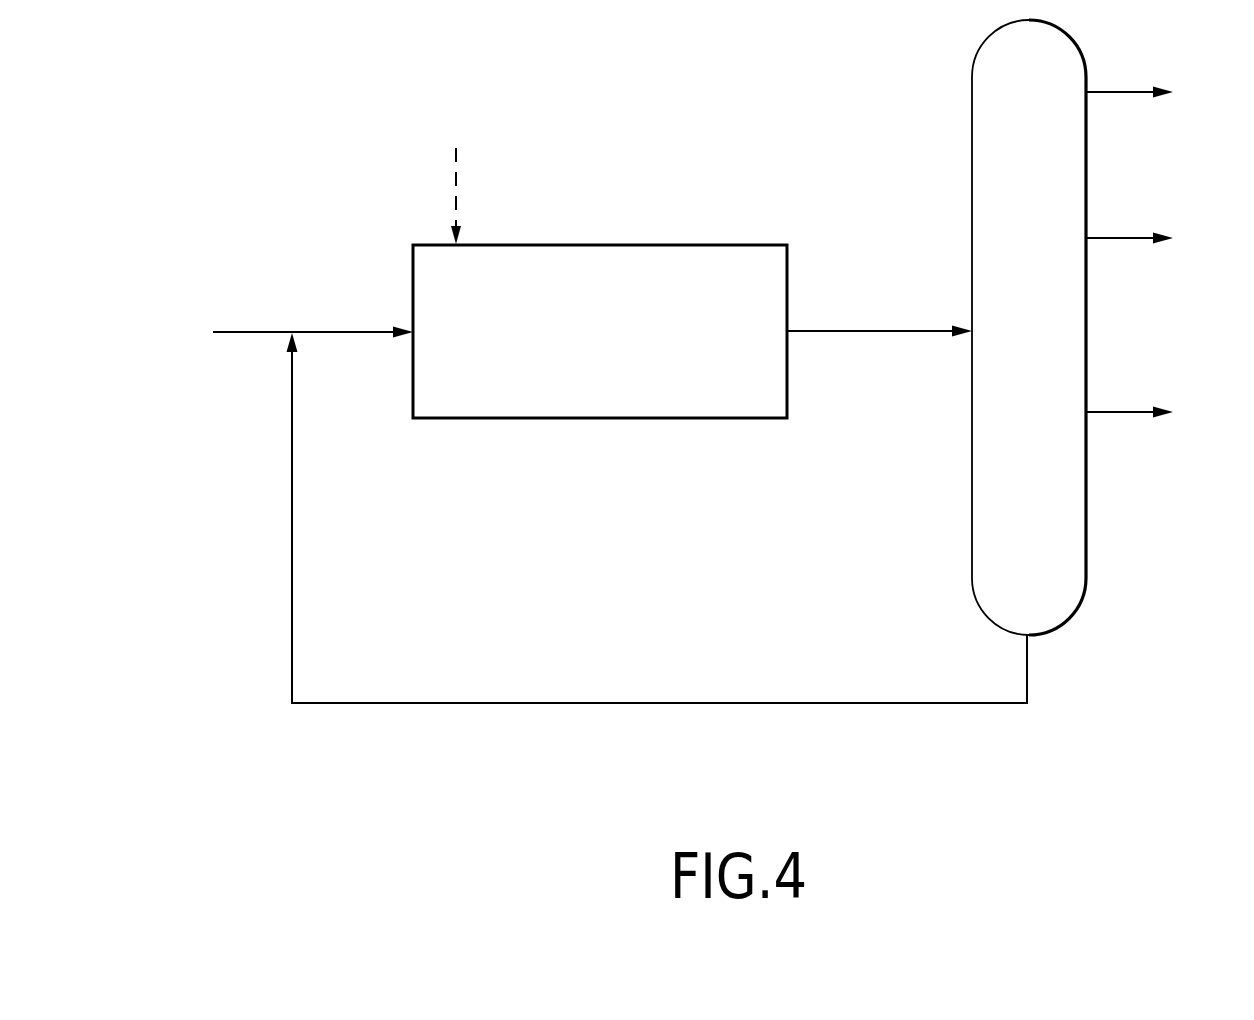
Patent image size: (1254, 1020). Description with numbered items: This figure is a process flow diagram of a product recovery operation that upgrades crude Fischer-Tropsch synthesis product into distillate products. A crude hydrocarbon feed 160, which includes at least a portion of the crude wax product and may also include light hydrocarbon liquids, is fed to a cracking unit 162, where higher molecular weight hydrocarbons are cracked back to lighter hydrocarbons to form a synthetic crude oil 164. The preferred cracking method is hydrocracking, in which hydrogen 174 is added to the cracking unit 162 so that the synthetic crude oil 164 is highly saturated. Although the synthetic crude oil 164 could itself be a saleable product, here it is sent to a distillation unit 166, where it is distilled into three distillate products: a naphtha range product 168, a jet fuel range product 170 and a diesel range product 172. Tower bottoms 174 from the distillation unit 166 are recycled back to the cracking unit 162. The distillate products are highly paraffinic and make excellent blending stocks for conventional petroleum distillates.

The crude hydrocarbon feed 160 is at (289, 329).
The cracking unit 162 is at (619, 336).
The synthetic crude oil 164 is at (868, 331).
The distillation unit 166 is at (1041, 417).
The naphtha range product 168 is at (1153, 89).
The jet fuel range product 170 is at (1153, 236).
The diesel range product 172 is at (1153, 409).
The tower bottoms 174 is at (662, 703).